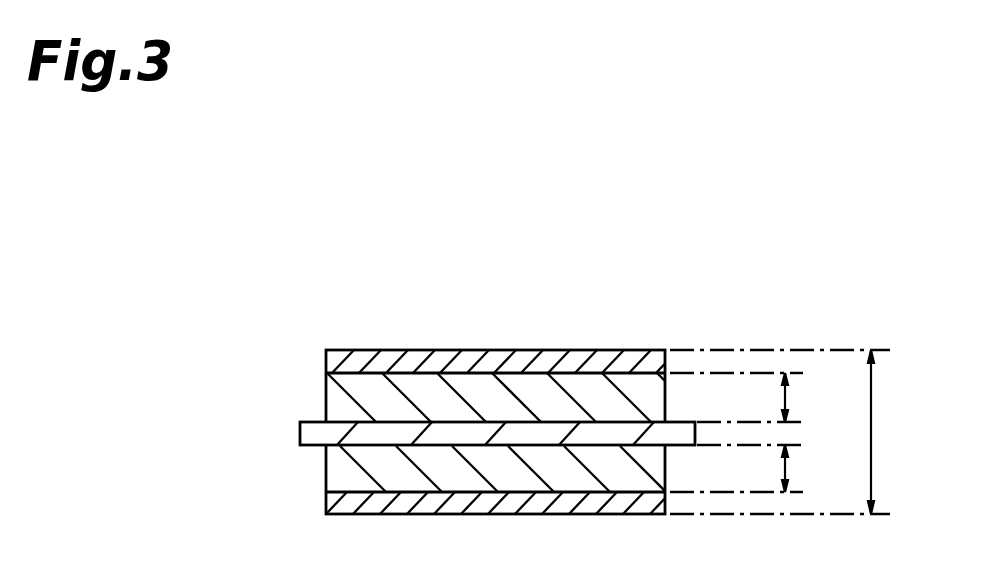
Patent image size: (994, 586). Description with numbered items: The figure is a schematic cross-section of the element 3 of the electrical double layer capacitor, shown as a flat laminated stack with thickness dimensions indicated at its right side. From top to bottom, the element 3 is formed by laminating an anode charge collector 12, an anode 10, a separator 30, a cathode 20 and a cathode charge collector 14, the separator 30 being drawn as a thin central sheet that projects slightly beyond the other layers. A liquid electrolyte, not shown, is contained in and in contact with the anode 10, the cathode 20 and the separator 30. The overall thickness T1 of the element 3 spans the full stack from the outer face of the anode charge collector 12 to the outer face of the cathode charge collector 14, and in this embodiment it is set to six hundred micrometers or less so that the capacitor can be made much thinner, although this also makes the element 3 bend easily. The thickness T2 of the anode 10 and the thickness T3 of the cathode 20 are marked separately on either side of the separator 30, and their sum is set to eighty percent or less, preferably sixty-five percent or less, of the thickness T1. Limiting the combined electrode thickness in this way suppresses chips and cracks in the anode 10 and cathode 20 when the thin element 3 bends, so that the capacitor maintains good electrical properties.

The element 3 is at (146, 340).
The anode charge collector 12 is at (326, 357).
The anode 10 is at (336, 395).
The separator 30 is at (338, 434).
The cathode 20 is at (336, 463).
The cathode charge collector 14 is at (336, 497).
The thickness of the element T1 is at (874, 430).
The thickness of the anode T2 is at (790, 398).
The thickness of the cathode T3 is at (790, 468).